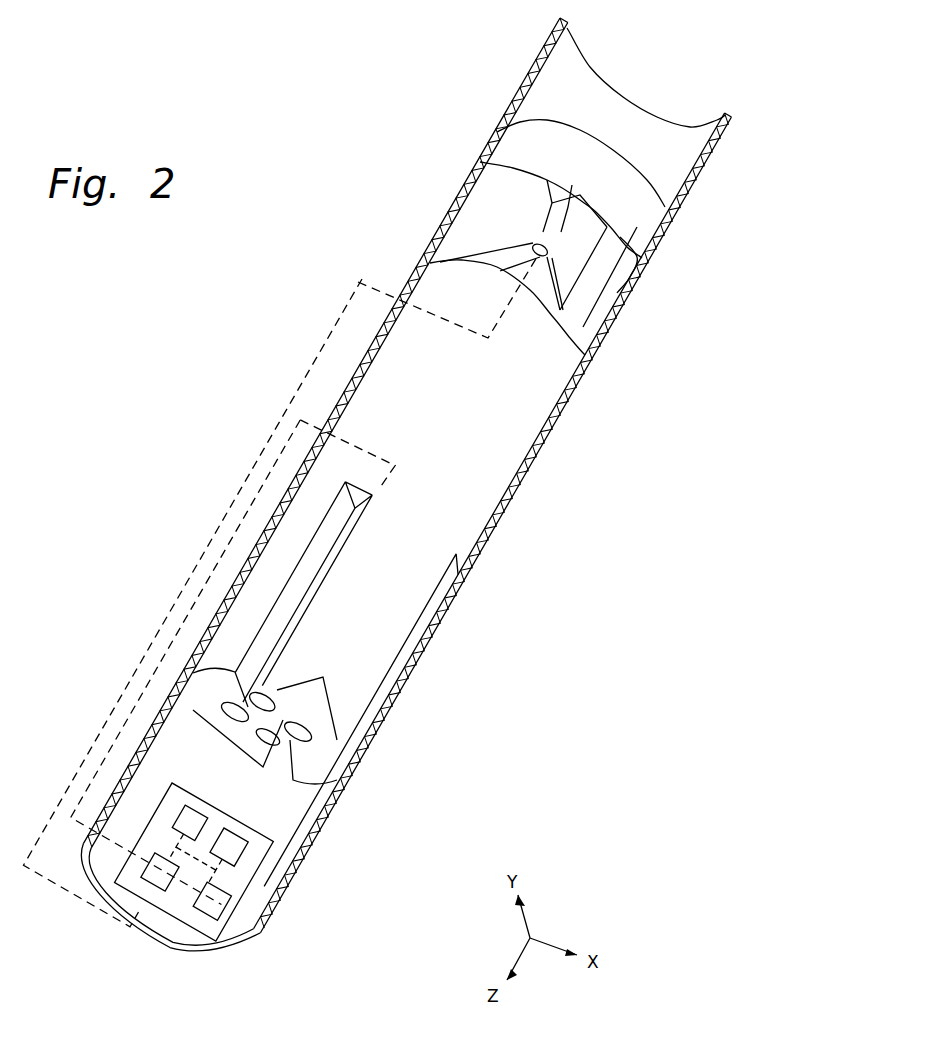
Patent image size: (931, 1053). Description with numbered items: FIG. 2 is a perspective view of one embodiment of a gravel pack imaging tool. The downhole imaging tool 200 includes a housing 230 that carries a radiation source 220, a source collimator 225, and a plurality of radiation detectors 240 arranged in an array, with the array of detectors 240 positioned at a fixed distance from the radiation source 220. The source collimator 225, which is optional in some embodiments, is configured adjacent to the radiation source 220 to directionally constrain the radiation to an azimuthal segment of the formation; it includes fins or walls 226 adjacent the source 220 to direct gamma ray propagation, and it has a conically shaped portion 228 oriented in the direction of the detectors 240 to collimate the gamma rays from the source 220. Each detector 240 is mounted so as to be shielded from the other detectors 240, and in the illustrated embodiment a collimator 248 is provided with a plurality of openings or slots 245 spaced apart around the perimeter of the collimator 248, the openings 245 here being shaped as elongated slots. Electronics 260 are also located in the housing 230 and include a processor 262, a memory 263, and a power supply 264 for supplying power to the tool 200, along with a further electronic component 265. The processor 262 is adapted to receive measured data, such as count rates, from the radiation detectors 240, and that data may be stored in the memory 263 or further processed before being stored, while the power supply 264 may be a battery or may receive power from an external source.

The downhole imaging tool 200 is at (567, 568).
The radiation source 220 is at (553, 205).
The source collimator 225 is at (580, 302).
The fins or walls 226 is at (573, 252).
The conically shaped portion 228 is at (493, 237).
The housing 230 is at (410, 687).
The radiation detectors 240 is at (270, 697).
The openings or slots 245 is at (210, 703).
The collimator 248 is at (232, 742).
The electronics 260 is at (247, 887).
The processor 262 is at (165, 868).
The memory 263 is at (218, 902).
The power supply 264 is at (230, 848).
The electronic component 265 is at (192, 822).